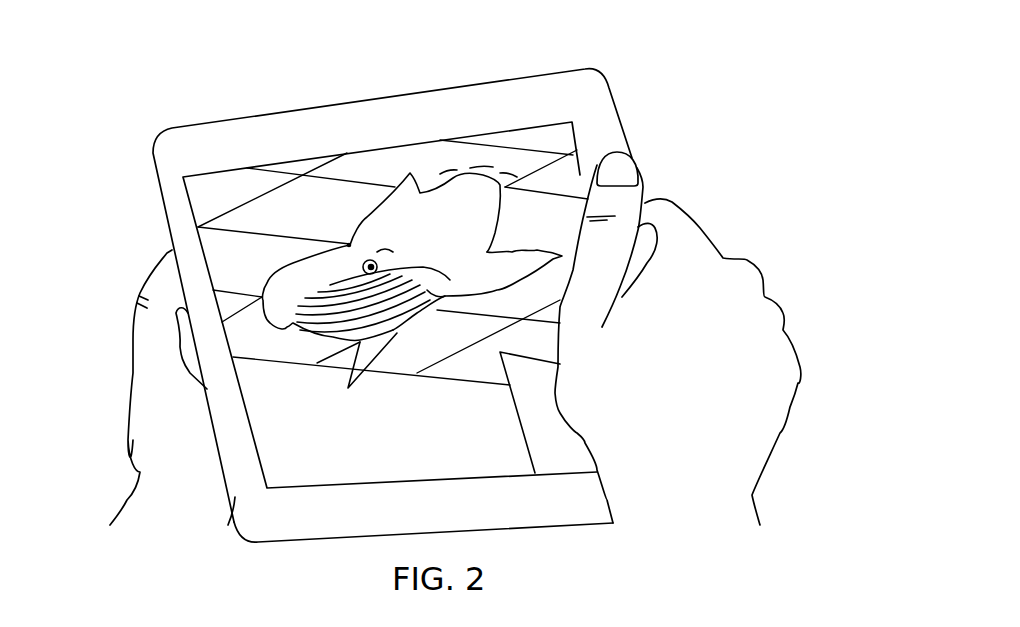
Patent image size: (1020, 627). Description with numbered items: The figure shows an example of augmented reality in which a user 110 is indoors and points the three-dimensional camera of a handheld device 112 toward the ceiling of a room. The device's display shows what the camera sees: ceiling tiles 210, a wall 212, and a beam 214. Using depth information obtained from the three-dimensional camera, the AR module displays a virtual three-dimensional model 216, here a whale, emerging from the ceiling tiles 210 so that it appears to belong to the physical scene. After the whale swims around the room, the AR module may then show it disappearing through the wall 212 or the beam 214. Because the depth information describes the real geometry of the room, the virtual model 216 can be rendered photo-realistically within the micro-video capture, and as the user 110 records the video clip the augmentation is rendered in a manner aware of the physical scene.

The user 110 is at (767, 391).
The handheld device 112 is at (610, 93).
The ceiling tiles 210 is at (248, 216).
The wall 212 is at (303, 420).
The beam 214 is at (543, 423).
The virtual 3D model 216 is at (477, 227).